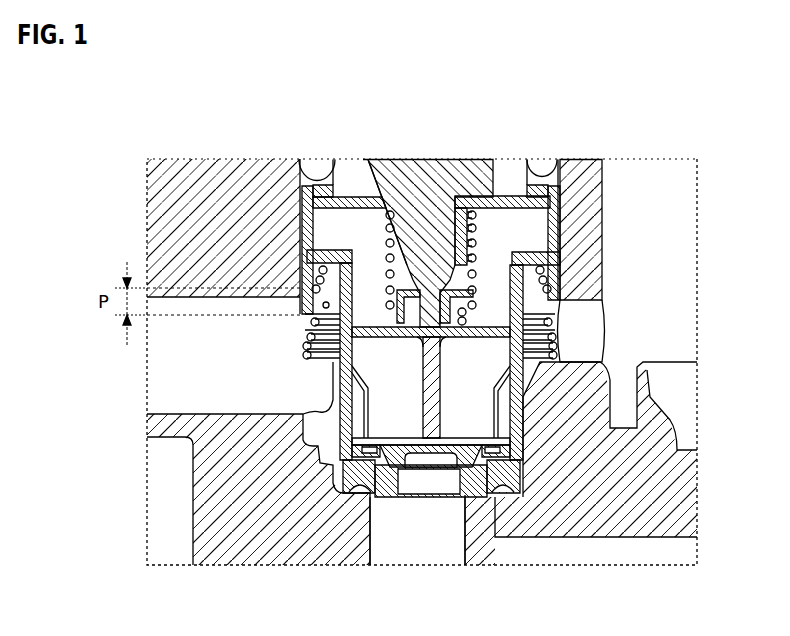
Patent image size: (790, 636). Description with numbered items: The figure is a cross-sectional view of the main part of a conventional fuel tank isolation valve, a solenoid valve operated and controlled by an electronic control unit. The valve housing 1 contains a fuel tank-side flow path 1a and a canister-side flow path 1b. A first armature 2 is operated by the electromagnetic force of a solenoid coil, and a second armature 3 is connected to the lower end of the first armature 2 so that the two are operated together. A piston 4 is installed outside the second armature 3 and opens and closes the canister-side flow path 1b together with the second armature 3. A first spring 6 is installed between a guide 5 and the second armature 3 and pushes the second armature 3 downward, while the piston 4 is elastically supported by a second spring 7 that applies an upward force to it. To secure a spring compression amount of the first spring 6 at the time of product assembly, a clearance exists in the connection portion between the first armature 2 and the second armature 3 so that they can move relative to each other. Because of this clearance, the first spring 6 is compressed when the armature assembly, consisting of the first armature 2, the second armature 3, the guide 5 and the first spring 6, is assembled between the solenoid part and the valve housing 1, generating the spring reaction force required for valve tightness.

The valve housing 1 is at (276, 540).
The fuel tank-side flow path 1a is at (170, 357).
The canister-side flow path 1b is at (388, 540).
The first armature 2 is at (428, 188).
The second armature 3 is at (430, 470).
The piston 4 is at (355, 470).
The guide 5 is at (346, 197).
The first spring 6 is at (476, 232).
The second spring 7 is at (536, 283).